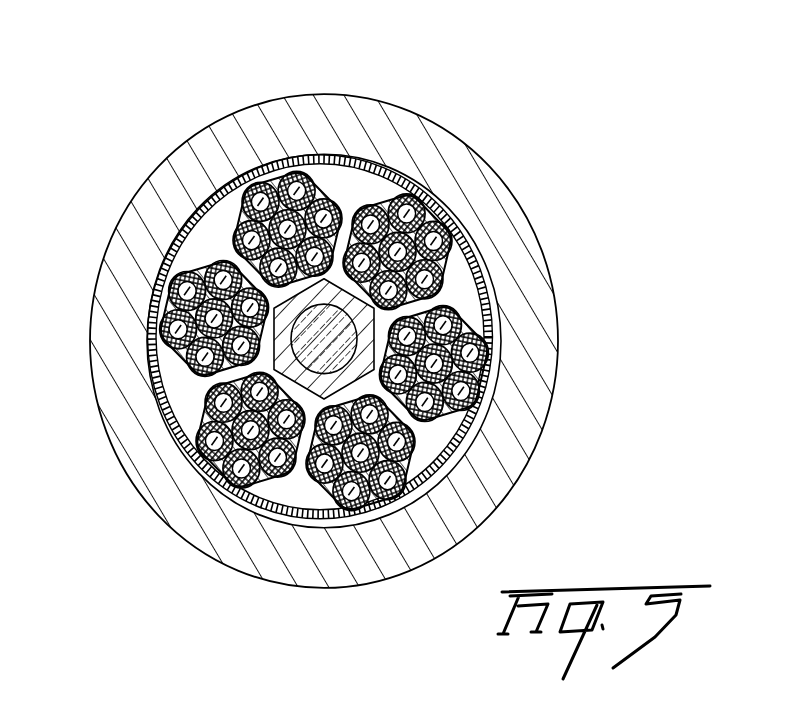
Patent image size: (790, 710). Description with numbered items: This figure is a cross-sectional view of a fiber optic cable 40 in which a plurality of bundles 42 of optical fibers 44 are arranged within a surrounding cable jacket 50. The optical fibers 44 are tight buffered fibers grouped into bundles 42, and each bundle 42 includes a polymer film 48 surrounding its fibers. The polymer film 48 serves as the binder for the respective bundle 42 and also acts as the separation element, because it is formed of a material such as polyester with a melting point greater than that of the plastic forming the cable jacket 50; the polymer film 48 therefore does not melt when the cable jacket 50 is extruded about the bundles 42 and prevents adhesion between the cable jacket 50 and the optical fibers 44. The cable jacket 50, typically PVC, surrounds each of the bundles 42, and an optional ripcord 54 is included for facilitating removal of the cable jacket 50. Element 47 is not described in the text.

The fiber optic cable 40 is at (540, 168).
The bundle 42 is at (384, 188).
The optical fibers 44 is at (496, 384).
The fiber subunit 47 is at (275, 172).
The polymer film 48 is at (210, 258).
The cable jacket 50 is at (527, 262).
The ripcord 54 is at (372, 160).